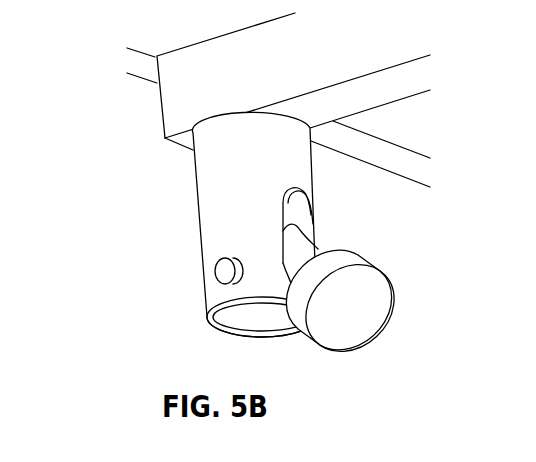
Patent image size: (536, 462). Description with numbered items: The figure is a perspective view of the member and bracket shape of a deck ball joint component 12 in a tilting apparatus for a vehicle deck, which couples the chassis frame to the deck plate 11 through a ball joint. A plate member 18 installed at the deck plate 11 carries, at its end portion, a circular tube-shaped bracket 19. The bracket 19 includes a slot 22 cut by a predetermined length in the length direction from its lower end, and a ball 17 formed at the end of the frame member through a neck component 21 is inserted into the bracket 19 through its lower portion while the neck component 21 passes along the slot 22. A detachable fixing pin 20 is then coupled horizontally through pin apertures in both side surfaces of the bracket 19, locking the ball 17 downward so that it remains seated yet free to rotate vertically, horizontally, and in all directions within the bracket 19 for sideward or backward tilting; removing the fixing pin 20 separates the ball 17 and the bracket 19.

The deck plate 11 is at (147, 33).
The deck ball joint component 12 is at (255, 248).
The ball 17 is at (293, 210).
The plate member 18 is at (173, 113).
The bracket 19 is at (210, 188).
The fixing pin 20 is at (220, 270).
The neck component 21 is at (302, 247).
The slot 22 is at (290, 240).